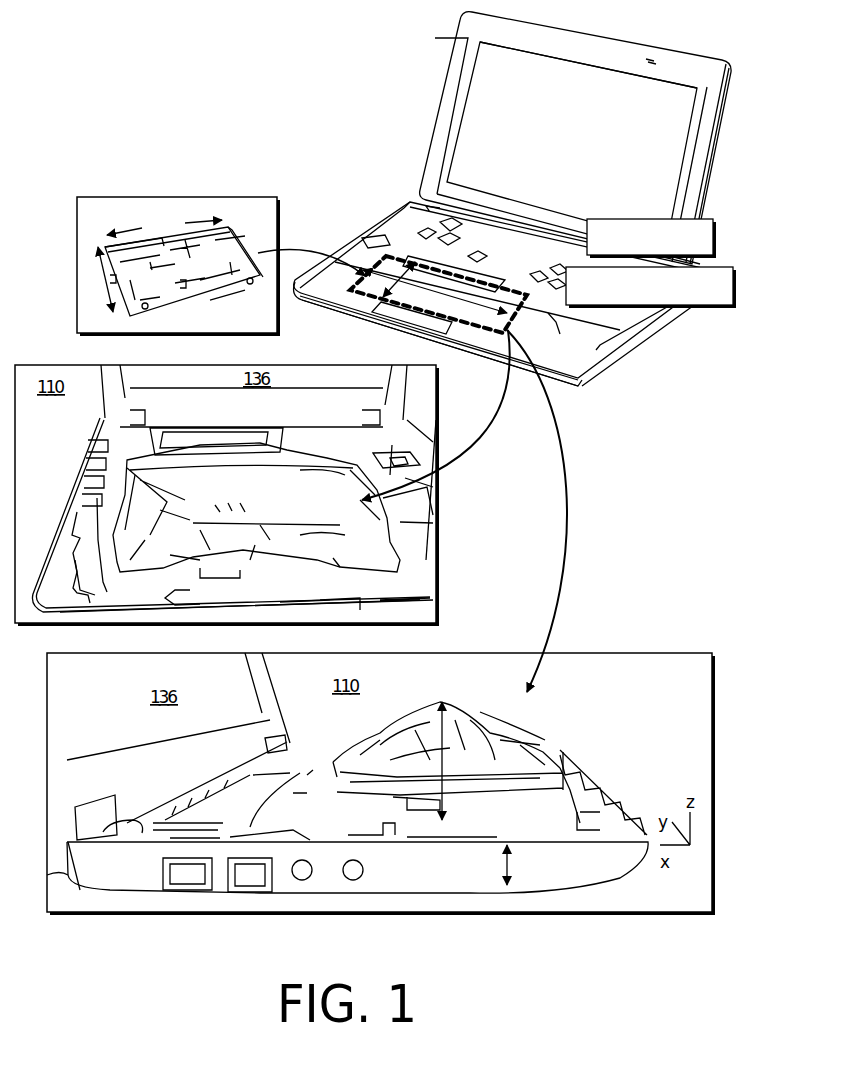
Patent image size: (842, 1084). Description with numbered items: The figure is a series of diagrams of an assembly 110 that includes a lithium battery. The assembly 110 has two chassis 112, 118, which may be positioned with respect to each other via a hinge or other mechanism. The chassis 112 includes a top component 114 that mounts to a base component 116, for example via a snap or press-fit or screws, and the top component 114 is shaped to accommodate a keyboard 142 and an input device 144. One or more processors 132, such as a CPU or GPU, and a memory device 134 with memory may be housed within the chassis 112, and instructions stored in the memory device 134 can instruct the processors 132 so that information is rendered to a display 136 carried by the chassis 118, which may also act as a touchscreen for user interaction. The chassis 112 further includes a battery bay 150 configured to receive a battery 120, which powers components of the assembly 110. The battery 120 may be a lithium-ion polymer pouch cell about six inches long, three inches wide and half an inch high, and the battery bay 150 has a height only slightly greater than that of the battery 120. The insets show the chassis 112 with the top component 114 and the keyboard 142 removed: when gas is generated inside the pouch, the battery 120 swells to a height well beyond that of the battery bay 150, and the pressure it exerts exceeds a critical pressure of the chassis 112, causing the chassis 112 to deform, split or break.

The assembly 110 is at (575, 133).
The chassis 112 is at (352, 222).
The top component 114 is at (580, 360).
The base component 116 is at (582, 380).
The chassis 118 is at (420, 118).
The battery 120 is at (379, 511).
The processors 132 is at (651, 287).
The memory device 134 is at (651, 238).
The display 136 is at (572, 142).
The keyboard 142 is at (465, 255).
The input device 144 is at (400, 316).
The battery bay 150 is at (350, 300).